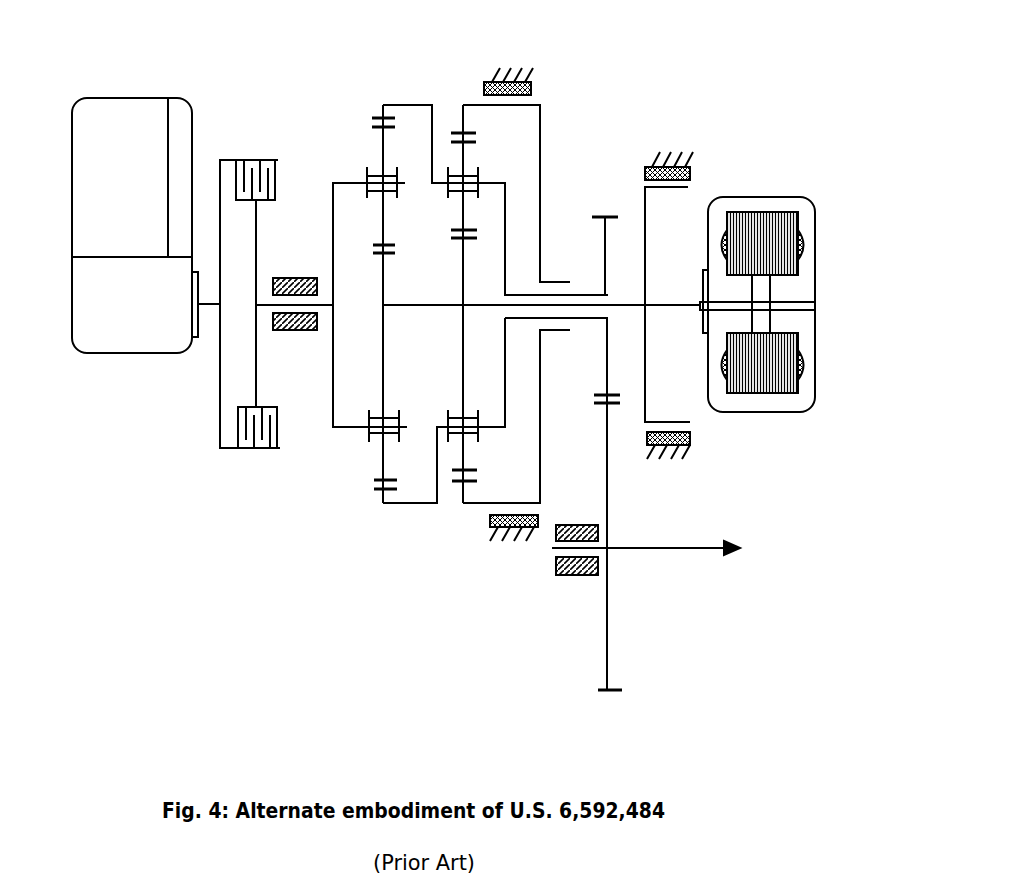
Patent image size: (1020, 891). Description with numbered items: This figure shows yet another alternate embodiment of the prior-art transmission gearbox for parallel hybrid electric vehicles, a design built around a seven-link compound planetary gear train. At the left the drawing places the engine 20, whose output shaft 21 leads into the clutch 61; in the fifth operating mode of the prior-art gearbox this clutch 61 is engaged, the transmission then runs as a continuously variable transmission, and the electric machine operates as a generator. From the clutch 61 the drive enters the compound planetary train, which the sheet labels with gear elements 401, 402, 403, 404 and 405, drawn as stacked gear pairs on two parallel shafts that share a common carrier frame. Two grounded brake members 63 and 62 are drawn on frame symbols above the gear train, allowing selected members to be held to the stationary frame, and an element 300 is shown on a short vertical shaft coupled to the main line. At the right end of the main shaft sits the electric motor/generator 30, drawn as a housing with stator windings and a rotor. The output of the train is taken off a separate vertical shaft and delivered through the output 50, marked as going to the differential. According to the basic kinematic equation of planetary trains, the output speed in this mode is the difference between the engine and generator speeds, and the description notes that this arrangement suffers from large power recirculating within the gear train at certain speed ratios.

The engine 20 is at (84, 352).
The engine output shaft 21 is at (212, 313).
The clutch 61 is at (258, 185).
The first planetary gear set sun gear 401 is at (376, 117).
The second planetary gear set 402 is at (437, 118).
The planet gears 403 is at (456, 240).
The carrier 404 is at (330, 200).
The ring gear 405 is at (472, 128).
The brake 63 is at (529, 80).
The intermediate gear 300 is at (608, 190).
The brake 62 is at (675, 152).
The electric motor/generator 30 is at (815, 216).
The output to differential 50 is at (700, 546).